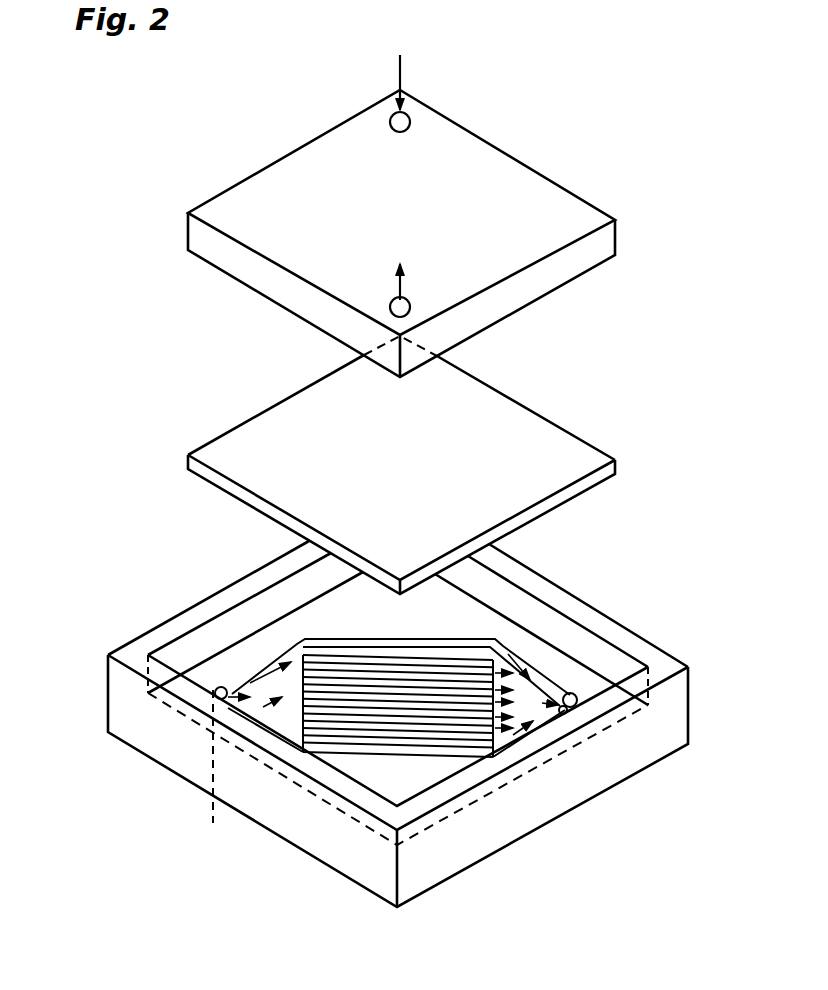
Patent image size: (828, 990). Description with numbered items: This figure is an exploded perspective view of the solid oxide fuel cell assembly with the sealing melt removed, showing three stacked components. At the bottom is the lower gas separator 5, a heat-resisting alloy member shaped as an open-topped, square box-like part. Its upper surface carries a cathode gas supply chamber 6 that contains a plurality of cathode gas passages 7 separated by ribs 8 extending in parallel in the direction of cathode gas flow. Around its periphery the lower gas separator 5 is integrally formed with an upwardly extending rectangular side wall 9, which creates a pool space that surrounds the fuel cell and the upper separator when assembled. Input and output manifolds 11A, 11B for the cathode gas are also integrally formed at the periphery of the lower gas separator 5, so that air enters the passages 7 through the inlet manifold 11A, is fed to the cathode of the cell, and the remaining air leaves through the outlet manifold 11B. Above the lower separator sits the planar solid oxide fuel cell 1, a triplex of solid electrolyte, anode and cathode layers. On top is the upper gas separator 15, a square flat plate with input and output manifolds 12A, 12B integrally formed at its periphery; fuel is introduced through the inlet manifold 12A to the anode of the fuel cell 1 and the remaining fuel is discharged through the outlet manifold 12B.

The solid oxide fuel cell 1 is at (182, 462).
The lower gas separator 5 is at (98, 700).
The cathode gas supply chamber 6 is at (218, 698).
The cathode gas passages 7 is at (472, 655).
The ribs 8 is at (318, 660).
The rectangular side wall 9 is at (174, 626).
The input manifold 11A is at (190, 772).
The output manifold 11B is at (587, 805).
The input manifold 12A is at (406, 117).
The output manifold 12B is at (393, 306).
The upper gas separator 15 is at (190, 226).